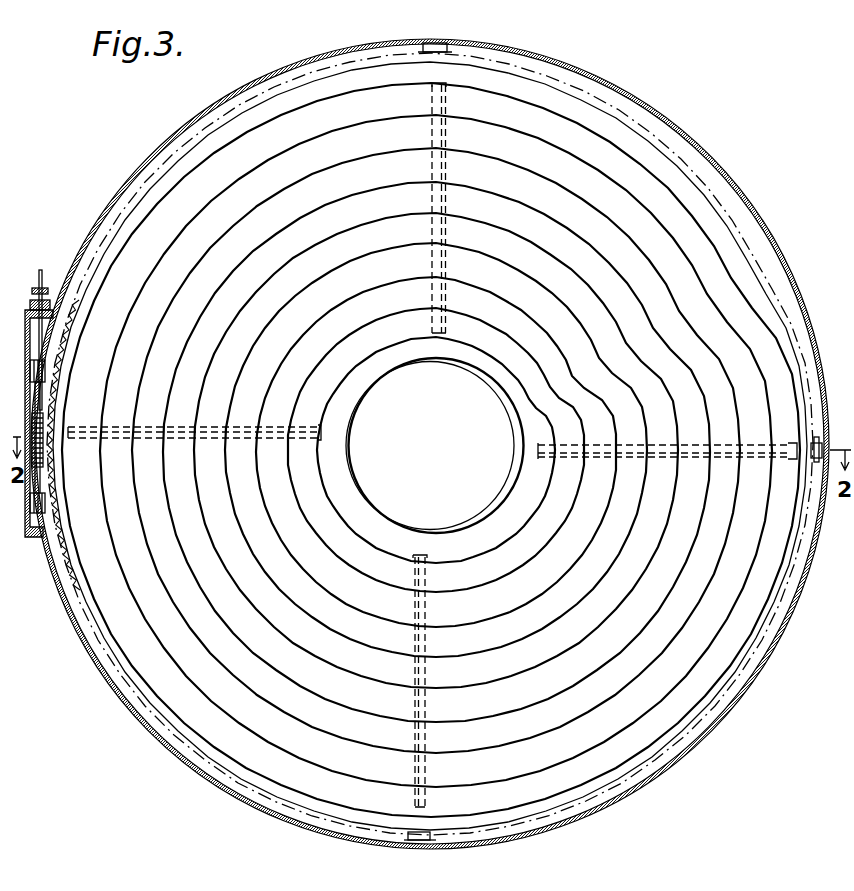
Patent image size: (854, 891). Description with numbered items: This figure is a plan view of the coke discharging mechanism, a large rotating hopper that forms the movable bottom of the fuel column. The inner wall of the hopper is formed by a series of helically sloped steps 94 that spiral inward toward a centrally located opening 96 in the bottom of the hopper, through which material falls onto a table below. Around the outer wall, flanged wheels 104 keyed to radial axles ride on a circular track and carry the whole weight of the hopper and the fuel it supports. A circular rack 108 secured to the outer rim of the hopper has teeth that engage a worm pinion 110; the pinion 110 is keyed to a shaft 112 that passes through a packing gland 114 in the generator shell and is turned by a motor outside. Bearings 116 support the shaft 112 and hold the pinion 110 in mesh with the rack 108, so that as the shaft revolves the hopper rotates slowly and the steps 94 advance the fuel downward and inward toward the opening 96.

The helically sloped steps 94 is at (636, 664).
The central opening 96 is at (463, 510).
The flanged wheel 104 is at (449, 44).
The circular rack 108 is at (60, 563).
The worm pinion 110 is at (45, 425).
The shaft 112 is at (42, 350).
The packing gland 114 is at (47, 303).
The bearings 116 is at (45, 374).